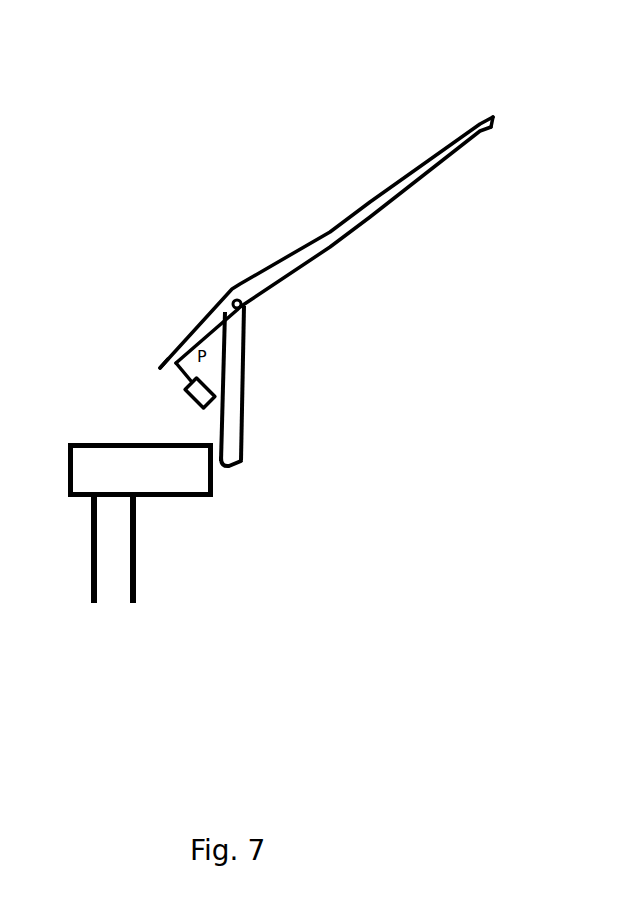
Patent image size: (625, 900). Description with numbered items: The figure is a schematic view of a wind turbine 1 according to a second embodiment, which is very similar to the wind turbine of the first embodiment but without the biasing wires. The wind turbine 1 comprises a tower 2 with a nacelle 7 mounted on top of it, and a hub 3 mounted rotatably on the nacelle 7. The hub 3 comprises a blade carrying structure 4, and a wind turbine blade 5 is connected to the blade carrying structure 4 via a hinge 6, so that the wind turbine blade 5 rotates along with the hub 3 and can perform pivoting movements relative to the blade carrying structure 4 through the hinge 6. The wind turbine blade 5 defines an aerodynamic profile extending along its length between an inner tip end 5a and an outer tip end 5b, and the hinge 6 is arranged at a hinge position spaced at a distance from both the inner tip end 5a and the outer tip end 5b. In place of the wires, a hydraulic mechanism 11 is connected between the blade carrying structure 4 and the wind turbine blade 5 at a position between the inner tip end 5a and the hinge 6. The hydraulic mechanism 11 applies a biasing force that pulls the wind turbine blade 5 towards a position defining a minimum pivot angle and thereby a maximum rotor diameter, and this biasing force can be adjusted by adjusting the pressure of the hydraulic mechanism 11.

The wind turbine 1 is at (393, 567).
The tower 2 is at (108, 560).
The hub 3 is at (215, 467).
The blade carrying structure 4 is at (231, 380).
The wind turbine blade 5 is at (371, 201).
The inner tip end 5a is at (157, 369).
The outer tip end 5b is at (494, 119).
The hinge 6 is at (234, 301).
The nacelle 7 is at (97, 470).
The hydraulic mechanism 11 is at (185, 398).